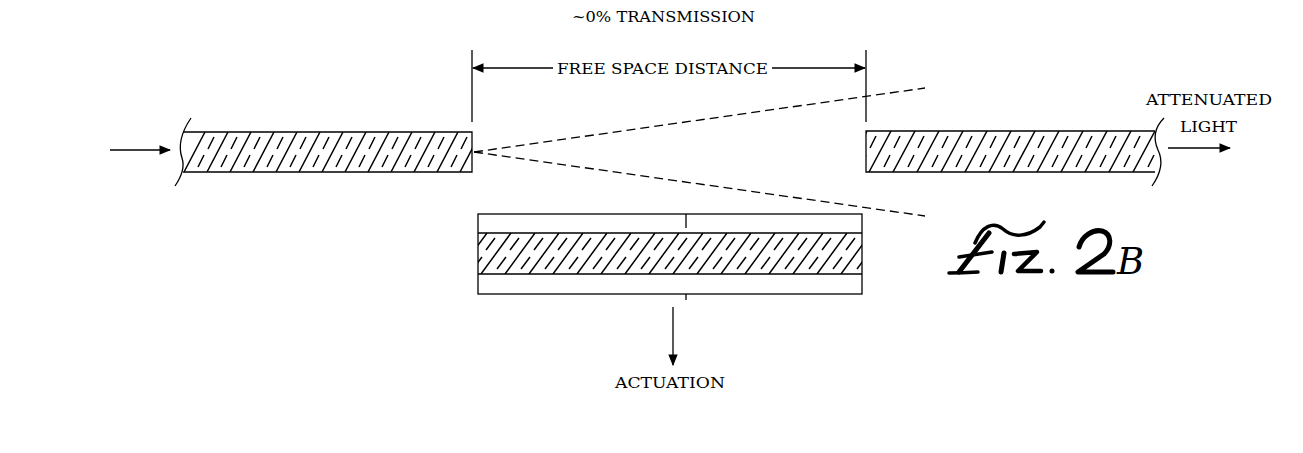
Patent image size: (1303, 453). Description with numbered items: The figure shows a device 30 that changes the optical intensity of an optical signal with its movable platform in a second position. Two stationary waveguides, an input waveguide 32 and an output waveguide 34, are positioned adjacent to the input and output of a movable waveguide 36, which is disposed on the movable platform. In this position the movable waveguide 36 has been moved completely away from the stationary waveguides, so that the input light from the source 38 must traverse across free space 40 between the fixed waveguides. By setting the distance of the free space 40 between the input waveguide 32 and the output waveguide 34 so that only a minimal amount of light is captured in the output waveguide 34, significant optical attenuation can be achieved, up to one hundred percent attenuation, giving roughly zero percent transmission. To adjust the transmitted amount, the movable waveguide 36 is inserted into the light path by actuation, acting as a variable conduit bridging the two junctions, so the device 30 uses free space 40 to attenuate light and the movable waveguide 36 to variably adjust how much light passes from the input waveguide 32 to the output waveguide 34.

The device 30 is at (440, 318).
The input waveguide 32 is at (373, 148).
The output waveguide 34 is at (1040, 150).
The movable waveguide 36 is at (838, 287).
The source 38 is at (130, 150).
The free space 40 is at (690, 160).